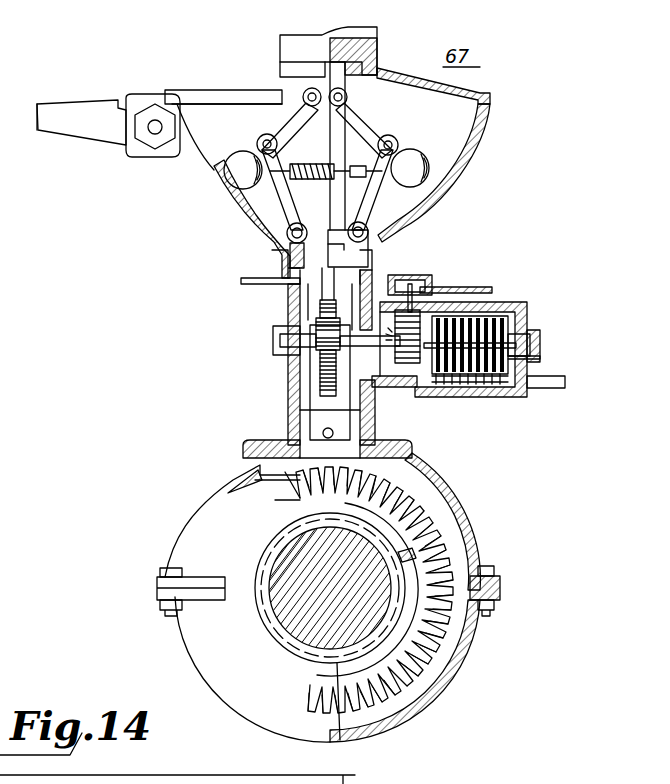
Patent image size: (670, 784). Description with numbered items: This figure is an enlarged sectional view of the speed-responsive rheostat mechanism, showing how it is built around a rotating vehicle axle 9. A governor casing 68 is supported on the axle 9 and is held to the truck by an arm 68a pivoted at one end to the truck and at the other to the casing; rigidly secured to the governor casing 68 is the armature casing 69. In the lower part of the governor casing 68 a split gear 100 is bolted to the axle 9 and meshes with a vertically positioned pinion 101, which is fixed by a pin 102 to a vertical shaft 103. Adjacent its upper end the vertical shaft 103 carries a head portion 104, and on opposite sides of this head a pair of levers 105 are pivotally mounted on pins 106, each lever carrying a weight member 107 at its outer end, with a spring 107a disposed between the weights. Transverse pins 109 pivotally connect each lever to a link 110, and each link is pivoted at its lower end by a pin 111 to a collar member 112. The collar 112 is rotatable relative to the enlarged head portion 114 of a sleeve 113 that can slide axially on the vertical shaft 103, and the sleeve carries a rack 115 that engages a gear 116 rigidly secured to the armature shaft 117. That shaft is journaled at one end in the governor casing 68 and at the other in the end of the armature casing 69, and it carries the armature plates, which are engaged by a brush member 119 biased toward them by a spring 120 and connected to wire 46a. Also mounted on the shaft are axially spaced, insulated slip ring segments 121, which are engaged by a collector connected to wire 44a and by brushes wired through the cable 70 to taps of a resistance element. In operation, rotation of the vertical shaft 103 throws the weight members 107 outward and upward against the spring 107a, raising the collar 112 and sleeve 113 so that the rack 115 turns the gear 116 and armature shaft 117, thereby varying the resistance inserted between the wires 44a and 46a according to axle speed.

The axle 9 is at (300, 640).
The wire 44a is at (522, 358).
The wire 46a is at (462, 288).
The governor casing 68 is at (252, 230).
The arm 68a is at (73, 118).
The armature casing 69 is at (528, 310).
The cable 70 is at (560, 378).
The split gear 100 is at (420, 572).
The pinion 101 is at (292, 476).
The pin 102 is at (336, 433).
The vertical shaft 103 is at (330, 410).
The head portion 104 is at (350, 77).
The levers 105 is at (352, 40).
The pins 106 is at (311, 90).
The weight member 107 is at (236, 180).
The spring 107a is at (330, 166).
The transverse pins 109 is at (264, 143).
The link 110 is at (288, 200).
The pin 111 is at (290, 246).
The collar member 112 is at (356, 256).
The sleeve 113 is at (322, 302).
The head portion 114 is at (318, 292).
The rack 115 is at (320, 390).
The gear 116 is at (318, 347).
The armature shaft 117 is at (290, 340).
The brush member 119 is at (455, 316).
The spring 120 is at (398, 286).
The slip ring segments 121 is at (462, 332).